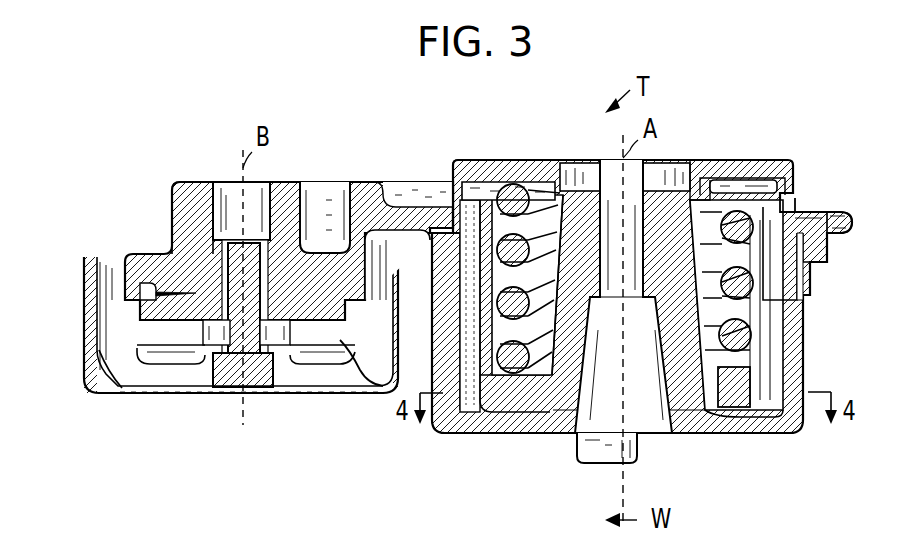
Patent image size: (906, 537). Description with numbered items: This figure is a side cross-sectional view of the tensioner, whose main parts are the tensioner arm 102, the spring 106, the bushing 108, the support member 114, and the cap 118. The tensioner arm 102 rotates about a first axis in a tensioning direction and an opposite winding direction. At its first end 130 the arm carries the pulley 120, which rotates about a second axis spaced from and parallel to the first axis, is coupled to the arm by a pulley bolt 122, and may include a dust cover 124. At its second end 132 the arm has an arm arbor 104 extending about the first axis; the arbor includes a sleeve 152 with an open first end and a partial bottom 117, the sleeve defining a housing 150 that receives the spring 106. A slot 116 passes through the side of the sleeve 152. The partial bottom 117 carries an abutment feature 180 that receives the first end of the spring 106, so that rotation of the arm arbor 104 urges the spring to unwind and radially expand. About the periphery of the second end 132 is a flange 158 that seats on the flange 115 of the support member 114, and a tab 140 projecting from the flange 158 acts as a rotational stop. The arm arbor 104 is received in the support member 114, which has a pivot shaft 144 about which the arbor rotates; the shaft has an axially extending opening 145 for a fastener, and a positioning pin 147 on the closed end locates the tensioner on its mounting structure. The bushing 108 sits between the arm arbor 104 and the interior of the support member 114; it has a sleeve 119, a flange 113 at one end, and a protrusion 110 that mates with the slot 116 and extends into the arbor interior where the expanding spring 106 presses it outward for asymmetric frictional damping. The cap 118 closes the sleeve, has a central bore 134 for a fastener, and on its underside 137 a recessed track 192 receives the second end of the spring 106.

The tensioner arm 102 is at (366, 210).
The arm arbor 104 is at (478, 412).
The spring 106 is at (808, 205).
The bushing 108 is at (450, 406).
The protrusion 110 is at (767, 330).
The flange 113 is at (432, 243).
The support member 114 is at (803, 352).
The flange 115 is at (818, 265).
The slot 116 is at (770, 305).
The partial bottom 117 is at (508, 398).
The cap 118 is at (728, 178).
The sleeve 119 is at (480, 336).
The pulley 120 is at (83, 334).
The pulley bolt 122 is at (233, 390).
The dust cover 124 is at (157, 367).
The first end 130 is at (202, 186).
The second end 132 is at (442, 175).
The bore 134 is at (684, 162).
The underside 137 is at (793, 197).
The tab 140 is at (853, 220).
The pivot shaft 144 is at (575, 170).
The axially extending opening 145 is at (612, 170).
The positioning pin 147 is at (578, 447).
The housing 150 is at (488, 180).
The sleeve 152 is at (472, 293).
The flange 158 is at (830, 205).
The abutment feature 180 is at (742, 398).
The track 192 is at (773, 180).